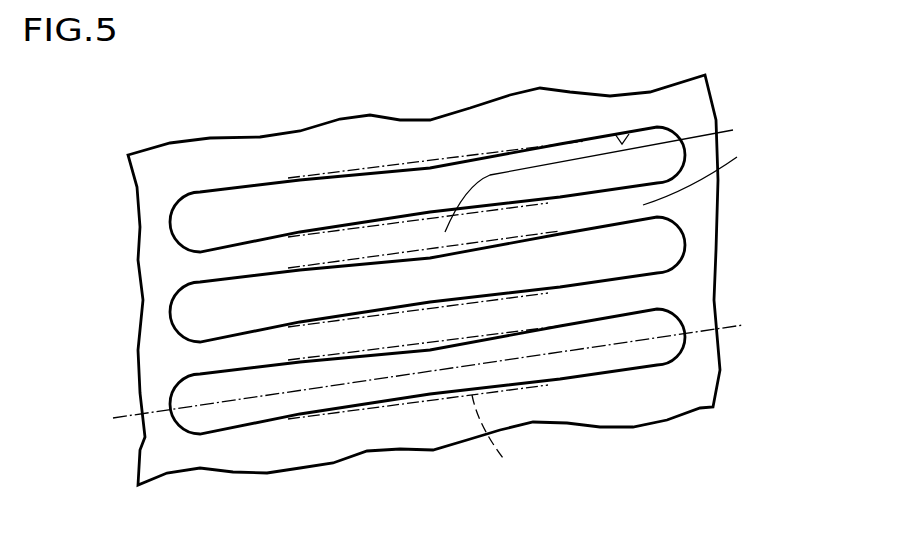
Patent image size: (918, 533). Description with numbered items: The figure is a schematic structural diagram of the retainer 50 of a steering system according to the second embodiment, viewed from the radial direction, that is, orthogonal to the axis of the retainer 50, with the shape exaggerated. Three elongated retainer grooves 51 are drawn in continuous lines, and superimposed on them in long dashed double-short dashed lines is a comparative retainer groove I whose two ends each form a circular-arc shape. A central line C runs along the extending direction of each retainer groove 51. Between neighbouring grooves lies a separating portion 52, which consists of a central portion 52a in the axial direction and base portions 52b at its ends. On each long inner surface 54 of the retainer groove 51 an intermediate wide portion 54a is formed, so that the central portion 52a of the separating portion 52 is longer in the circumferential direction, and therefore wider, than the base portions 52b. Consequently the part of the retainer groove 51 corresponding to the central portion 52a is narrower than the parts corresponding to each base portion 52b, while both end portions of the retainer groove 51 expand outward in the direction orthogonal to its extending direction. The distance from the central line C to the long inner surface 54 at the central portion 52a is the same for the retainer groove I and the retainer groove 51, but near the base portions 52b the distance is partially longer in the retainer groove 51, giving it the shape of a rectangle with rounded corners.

The retainer 50 is at (257, 135).
The retainer groove 51 is at (316, 272).
The separating portion 52 is at (646, 172).
The central portion 52a is at (618, 172).
The base portion 52b is at (717, 175).
The long inner surface 54 is at (623, 135).
The intermediate wide portion 54a is at (427, 170).
The central line C is at (127, 408).
The retainer groove of comparative example I is at (490, 444).